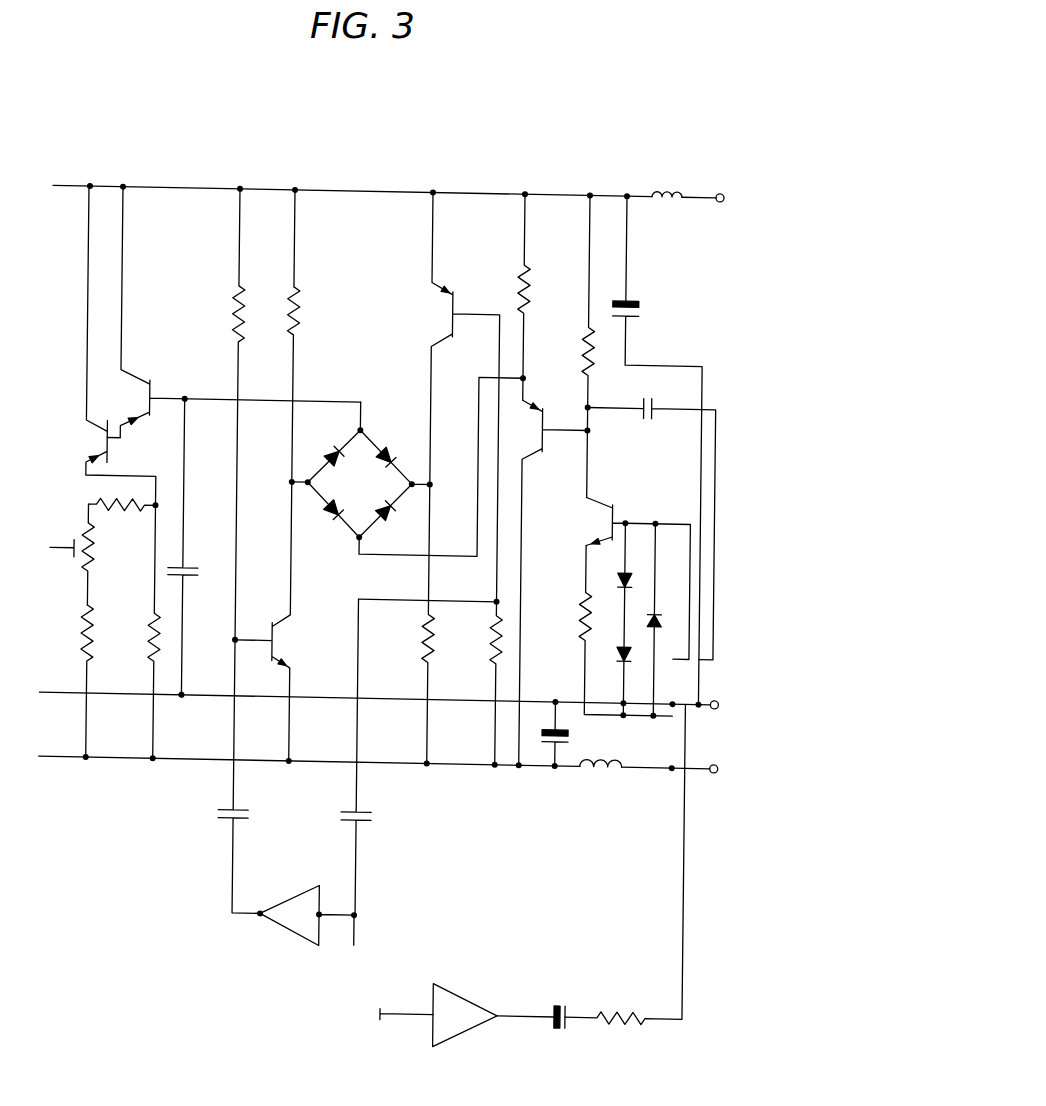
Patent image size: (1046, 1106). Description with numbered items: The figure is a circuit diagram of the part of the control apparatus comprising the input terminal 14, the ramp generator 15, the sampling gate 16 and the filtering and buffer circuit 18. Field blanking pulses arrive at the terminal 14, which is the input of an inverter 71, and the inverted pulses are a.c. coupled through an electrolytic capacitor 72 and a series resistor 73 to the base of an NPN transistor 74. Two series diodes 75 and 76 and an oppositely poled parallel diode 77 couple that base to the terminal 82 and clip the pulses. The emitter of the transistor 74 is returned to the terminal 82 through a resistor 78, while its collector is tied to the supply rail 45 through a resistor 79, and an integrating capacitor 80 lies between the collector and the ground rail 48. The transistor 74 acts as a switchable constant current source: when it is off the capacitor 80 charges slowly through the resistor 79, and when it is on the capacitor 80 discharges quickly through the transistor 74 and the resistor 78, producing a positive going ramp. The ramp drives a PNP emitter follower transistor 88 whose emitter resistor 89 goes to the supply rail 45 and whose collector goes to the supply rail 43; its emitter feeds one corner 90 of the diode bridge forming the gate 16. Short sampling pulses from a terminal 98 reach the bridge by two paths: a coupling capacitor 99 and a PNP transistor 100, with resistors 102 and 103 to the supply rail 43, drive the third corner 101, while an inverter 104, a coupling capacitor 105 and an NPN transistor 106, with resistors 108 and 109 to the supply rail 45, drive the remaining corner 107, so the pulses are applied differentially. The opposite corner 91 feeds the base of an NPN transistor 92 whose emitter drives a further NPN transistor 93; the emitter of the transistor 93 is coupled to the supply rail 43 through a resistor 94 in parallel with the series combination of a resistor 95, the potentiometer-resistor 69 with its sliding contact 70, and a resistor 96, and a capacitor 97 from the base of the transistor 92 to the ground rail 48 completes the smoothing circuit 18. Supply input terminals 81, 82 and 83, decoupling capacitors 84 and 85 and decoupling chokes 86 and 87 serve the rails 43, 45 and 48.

The input terminal 14 is at (389, 1003).
The ramp generator 15 is at (660, 471).
The sampling gate 16 is at (365, 479).
The filtering and buffer circuit 18 is at (207, 347).
The supply rail 43 is at (68, 758).
The supply rail 45 is at (82, 184).
The ground rail 48 is at (70, 694).
The potentiometer-resistor 69 is at (93, 556).
The sliding contact 70 is at (76, 560).
The inverter 71 is at (466, 1000).
The electrolytic capacitor 72 is at (570, 996).
The series resistor 73 is at (630, 1002).
The NPN transistor 74 is at (612, 514).
The diode 75 is at (624, 566).
The diode 76 is at (620, 653).
The parallel diode 77 is at (664, 606).
The resistor 78 is at (583, 603).
The resistor 79 is at (588, 332).
The integrating capacitor 80 is at (645, 392).
The supply input terminal 81 is at (719, 698).
The supply input terminal 82 is at (719, 762).
The supply input terminal 83 is at (720, 190).
The decoupling capacitor 84 is at (577, 735).
The decoupling capacitor 85 is at (641, 306).
The decoupling choke 86 is at (608, 768).
The decoupling choke 87 is at (673, 192).
The PNP emitter follower transistor 88 is at (545, 437).
The emitter resistor 89 is at (529, 281).
The corner of diode bridge 90 is at (358, 540).
The opposite corner of diode bridge 91 is at (365, 424).
The NPN transistor 92 is at (150, 398).
The NPN transistor 93 is at (108, 439).
The resistor 94 is at (156, 620).
The resistor 95 is at (139, 509).
The resistor 96 is at (97, 648).
The capacitor 97 is at (192, 563).
The terminal 98 is at (366, 928).
The series coupling capacitor 99 is at (382, 817).
The PNP transistor 100 is at (452, 320).
The third corner of gate 101 is at (414, 476).
The resistor 102 is at (427, 641).
The resistor 103 is at (496, 641).
The inverter 104 is at (299, 936).
The series coupling capacitor 105 is at (222, 814).
The NPN transistor 106 is at (279, 639).
The remaining corner of gate 107 is at (311, 476).
The resistor 108 is at (300, 318).
The resistor 109 is at (234, 318).